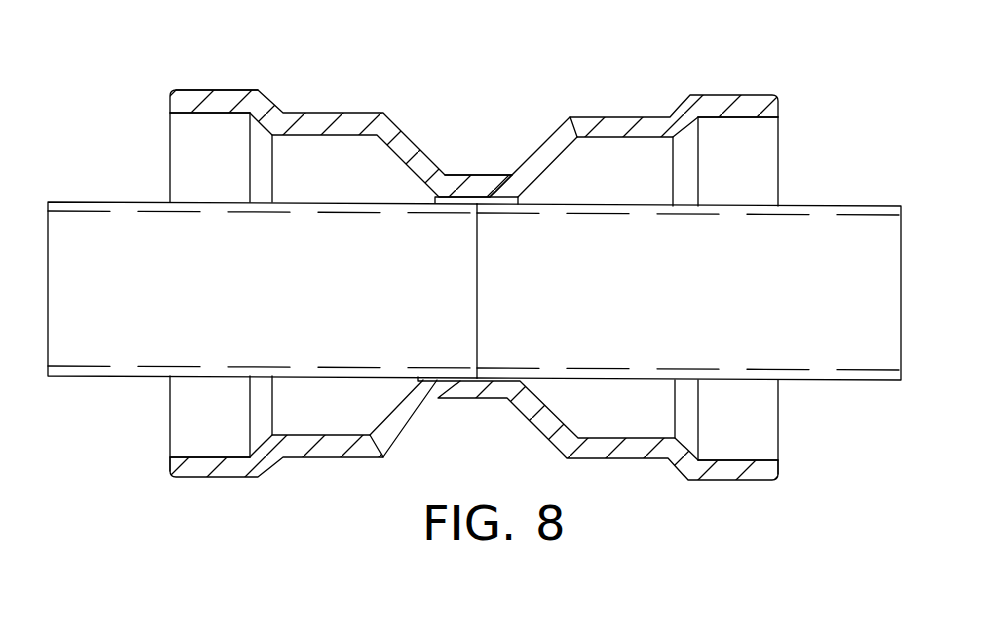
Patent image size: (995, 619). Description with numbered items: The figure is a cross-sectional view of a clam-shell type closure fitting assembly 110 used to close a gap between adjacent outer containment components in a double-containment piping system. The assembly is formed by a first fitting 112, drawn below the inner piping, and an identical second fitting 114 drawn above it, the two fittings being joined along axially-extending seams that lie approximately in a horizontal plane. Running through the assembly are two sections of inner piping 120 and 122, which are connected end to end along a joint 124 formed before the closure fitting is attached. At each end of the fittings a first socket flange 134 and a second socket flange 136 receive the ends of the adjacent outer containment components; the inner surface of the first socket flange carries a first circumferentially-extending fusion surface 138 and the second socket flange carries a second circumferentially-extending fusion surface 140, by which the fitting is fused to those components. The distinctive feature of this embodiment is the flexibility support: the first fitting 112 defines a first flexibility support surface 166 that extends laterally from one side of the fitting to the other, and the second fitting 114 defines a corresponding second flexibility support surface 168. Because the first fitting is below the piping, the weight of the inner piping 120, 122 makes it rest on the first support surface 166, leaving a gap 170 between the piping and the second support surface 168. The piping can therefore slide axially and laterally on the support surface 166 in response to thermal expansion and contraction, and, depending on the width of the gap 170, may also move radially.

The closure fitting assembly 110 is at (590, 90).
The first fitting 112 is at (345, 457).
The second fitting 114 is at (375, 113).
The inner piping 120 is at (128, 202).
The inner piping 122 is at (795, 206).
The joint 124 is at (477, 254).
The first socket flange 134 is at (210, 90).
The second socket flange 136 is at (752, 94).
The first circumferentially-extending fusion surface 138 is at (193, 113).
The second circumferentially-extending fusion surface 140 is at (738, 117).
The first flexibility support surface 166 is at (484, 380).
The second flexibility support surface 168 is at (488, 190).
The gap 170 is at (435, 199).